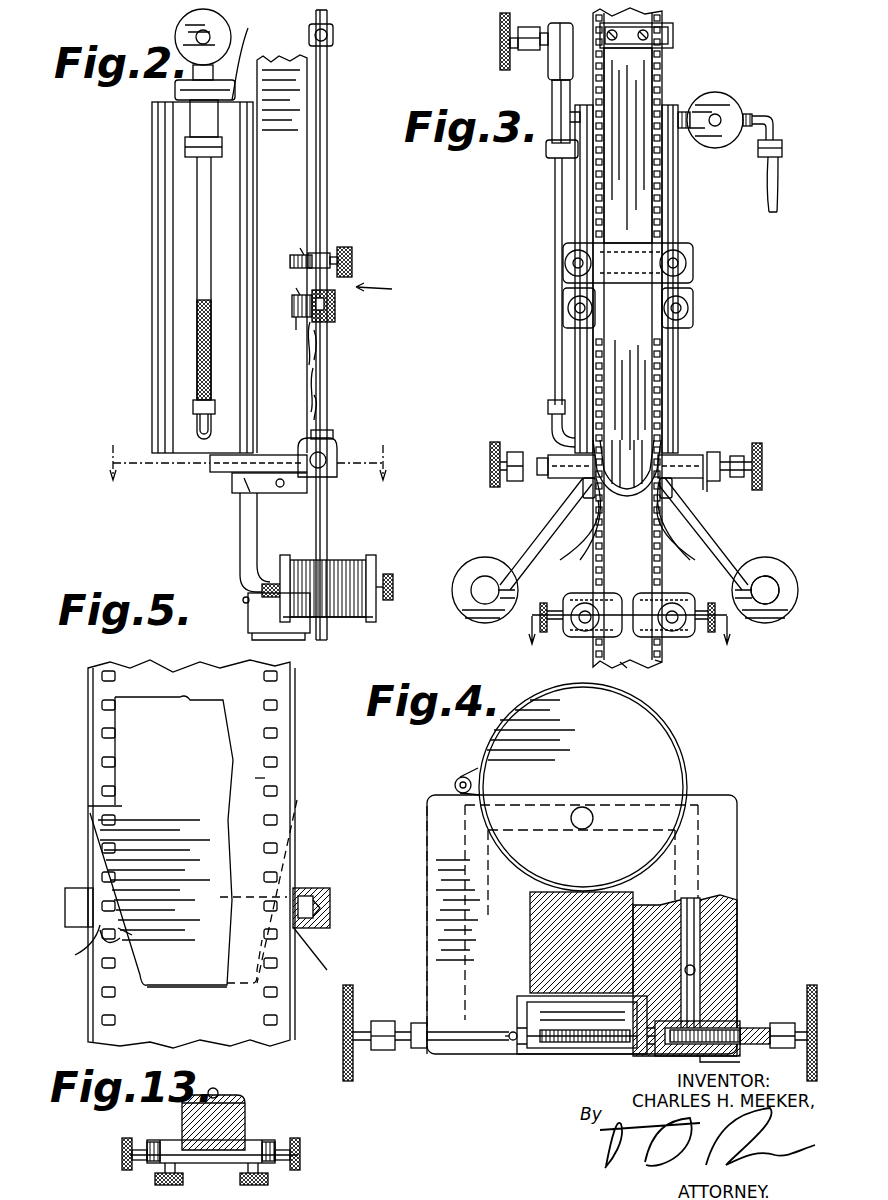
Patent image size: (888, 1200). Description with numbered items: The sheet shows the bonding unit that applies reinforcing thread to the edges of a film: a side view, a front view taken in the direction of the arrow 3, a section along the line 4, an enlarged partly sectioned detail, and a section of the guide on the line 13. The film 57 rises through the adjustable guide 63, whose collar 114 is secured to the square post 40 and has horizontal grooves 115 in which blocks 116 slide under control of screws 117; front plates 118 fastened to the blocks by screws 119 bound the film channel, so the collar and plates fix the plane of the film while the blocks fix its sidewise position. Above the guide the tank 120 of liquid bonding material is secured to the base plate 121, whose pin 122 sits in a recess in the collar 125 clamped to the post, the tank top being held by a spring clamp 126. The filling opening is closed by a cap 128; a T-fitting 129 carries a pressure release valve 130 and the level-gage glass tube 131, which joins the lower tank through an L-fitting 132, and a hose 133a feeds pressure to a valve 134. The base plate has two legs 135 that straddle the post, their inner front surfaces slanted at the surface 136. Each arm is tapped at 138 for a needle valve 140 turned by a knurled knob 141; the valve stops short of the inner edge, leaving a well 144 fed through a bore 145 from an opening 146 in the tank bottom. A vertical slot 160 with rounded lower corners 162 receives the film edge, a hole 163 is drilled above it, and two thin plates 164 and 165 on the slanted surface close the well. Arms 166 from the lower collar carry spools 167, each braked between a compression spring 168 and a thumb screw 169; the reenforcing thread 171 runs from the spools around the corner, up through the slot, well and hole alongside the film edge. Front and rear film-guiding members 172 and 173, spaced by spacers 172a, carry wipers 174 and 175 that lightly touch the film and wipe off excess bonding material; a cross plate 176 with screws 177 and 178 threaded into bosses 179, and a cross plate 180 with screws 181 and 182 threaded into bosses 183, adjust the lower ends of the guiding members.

In FIG. 2, the arrow 3 is at (374, 296).
In FIG. 2, the section line 4 is at (247, 462).
In FIG. 3, the section line 13 is at (636, 624).
In FIG. 2, the square post 40 is at (290, 210).
In FIG. 4, the square post 40 is at (550, 956).
In FIG. 13, the square post 40 is at (244, 1103).
In FIG. 2, the film 57 is at (327, 640).
In FIG. 3, the film 57 is at (625, 665).
In FIG. 5, the film 57 is at (173, 670).
In FIG. 3, the adjustable guide 63 is at (718, 630).
In FIG. 13, the adjustable guide 63 is at (235, 1130).
In FIG. 13, the collar 114 is at (185, 1103).
In FIG. 13, the horizontal grooves 115 is at (147, 1146).
In FIG. 13, the blocks 116 is at (270, 1160).
In FIG. 3, the screws 117 is at (570, 624).
In FIG. 13, the screws 117 is at (132, 1158).
In FIG. 3, the front plates 118 is at (658, 662).
In FIG. 13, the front plates 118 is at (222, 1165).
In FIG. 3, the screws 119 is at (582, 636).
In FIG. 13, the screws 119 is at (165, 1180).
In FIG. 2, the tank 120 is at (165, 178).
In FIG. 3, the tank 120 is at (678, 286).
In FIG. 4, the tank 120 is at (684, 760).
In FIG. 2, the base plate 121 is at (212, 474).
In FIG. 3, the base plate 121 is at (700, 480).
In FIG. 4, the base plate 121 is at (720, 872).
In FIG. 2, the pin 122 is at (232, 484).
In FIG. 2, the collar 125 is at (252, 494).
In FIG. 3, the collar 125 is at (660, 508).
In FIG. 2, the spring clamp 126 is at (246, 48).
In FIG. 2, the cap 128 is at (208, 104).
In FIG. 2, the T-fitting 129 is at (203, 124).
In FIG. 3, the T-fitting 129 is at (554, 126).
In FIG. 2, the pressure release valve 130 is at (190, 36).
In FIG. 3, the pressure release valve 130 is at (553, 62).
In FIG. 2, the level-gage glass tube 131 is at (203, 258).
In FIG. 3, the level-gage glass tube 131 is at (557, 200).
In FIG. 2, the L-fitting 132 is at (200, 432).
In FIG. 3, the L-fitting 132 is at (552, 428).
In FIG. 3, the hose 133a is at (764, 178).
In FIG. 3, the valve 134 is at (727, 118).
In FIG. 3, the legs 135 is at (688, 459).
In FIG. 4, the legs 135 is at (436, 872).
In FIG. 5, the slanting surface 136 is at (110, 940).
In FIG. 4, the drilled and tapped hole 138 is at (704, 1058).
In FIG. 3, the needle valve 140 is at (548, 478).
In FIG. 4, the needle valve 140 is at (421, 1058).
In FIG. 3, the knurled knob 141 is at (492, 470).
In FIG. 4, the knurled knob 141 is at (343, 1050).
In FIG. 4, the well 144 is at (648, 1052).
In FIG. 4, the bore 145 is at (696, 970).
In FIG. 4, the opening 146 is at (588, 810).
In FIG. 4, the vertical slot 160 is at (680, 1030).
In FIG. 5, the vertical slot 160 is at (262, 957).
In FIG. 5, the lower corners 162 is at (305, 926).
In FIG. 4, the hole 163 is at (511, 1041).
In FIG. 5, the hole 163 is at (305, 890).
In FIG. 4, the thin plate 164 is at (628, 1016).
In FIG. 5, the thin plate 164 is at (220, 897).
In FIG. 4, the thin plate 165 is at (640, 1042).
In FIG. 5, the thin plate 165 is at (118, 929).
In FIG. 2, the arms 166 is at (240, 548).
In FIG. 3, the arms 166 is at (555, 548).
In FIG. 2, the spool 167 is at (373, 614).
In FIG. 3, the spool 167 is at (481, 565).
In FIG. 2, the compression spring 168 is at (262, 590).
In FIG. 2, the thumb screw 169 is at (389, 584).
In FIG. 3, the thumb screw 169 is at (772, 590).
In FIG. 2, the reenforcing thread 171 is at (330, 566).
In FIG. 3, the reenforcing thread 171 is at (702, 542).
In FIG. 5, the reenforcing thread 171 is at (88, 682).
In FIG. 2, the front film-guiding member 172 is at (328, 376).
In FIG. 3, the front film-guiding member 172 is at (640, 380).
In FIG. 4, the front film-guiding member 172 is at (562, 1056).
In FIG. 5, the front film-guiding member 172 is at (130, 748).
In FIG. 2, the spacers 172a is at (334, 36).
In FIG. 3, the spacers 172a is at (675, 35).
In FIG. 2, the rear film-guiding member 173 is at (328, 395).
In FIG. 4, the rear film-guiding member 173 is at (580, 1050).
In FIG. 5, the rear film-guiding member 173 is at (255, 778).
In FIG. 2, the wipers 174 is at (337, 446).
In FIG. 3, the wipers 174 is at (655, 440).
In FIG. 5, the wipers 174 is at (96, 812).
In FIG. 2, the wipers 175 is at (332, 435).
In FIG. 5, the wipers 175 is at (290, 806).
In FIG. 2, the cross plate 176 is at (330, 252).
In FIG. 3, the cross plate 176 is at (645, 251).
In FIG. 2, the screw 177 is at (352, 262).
In FIG. 3, the screw 177 is at (566, 263).
In FIG. 3, the screw 178 is at (688, 265).
In FIG. 2, the bosses 179 is at (298, 255).
In FIG. 2, the cross plate 180 is at (328, 337).
In FIG. 2, the screw 181 is at (335, 315).
In FIG. 3, the screw 181 is at (568, 318).
In FIG. 3, the screw 182 is at (690, 312).
In FIG. 5, the screw 182 is at (208, 975).
In FIG. 2, the bosses 183 is at (300, 320).